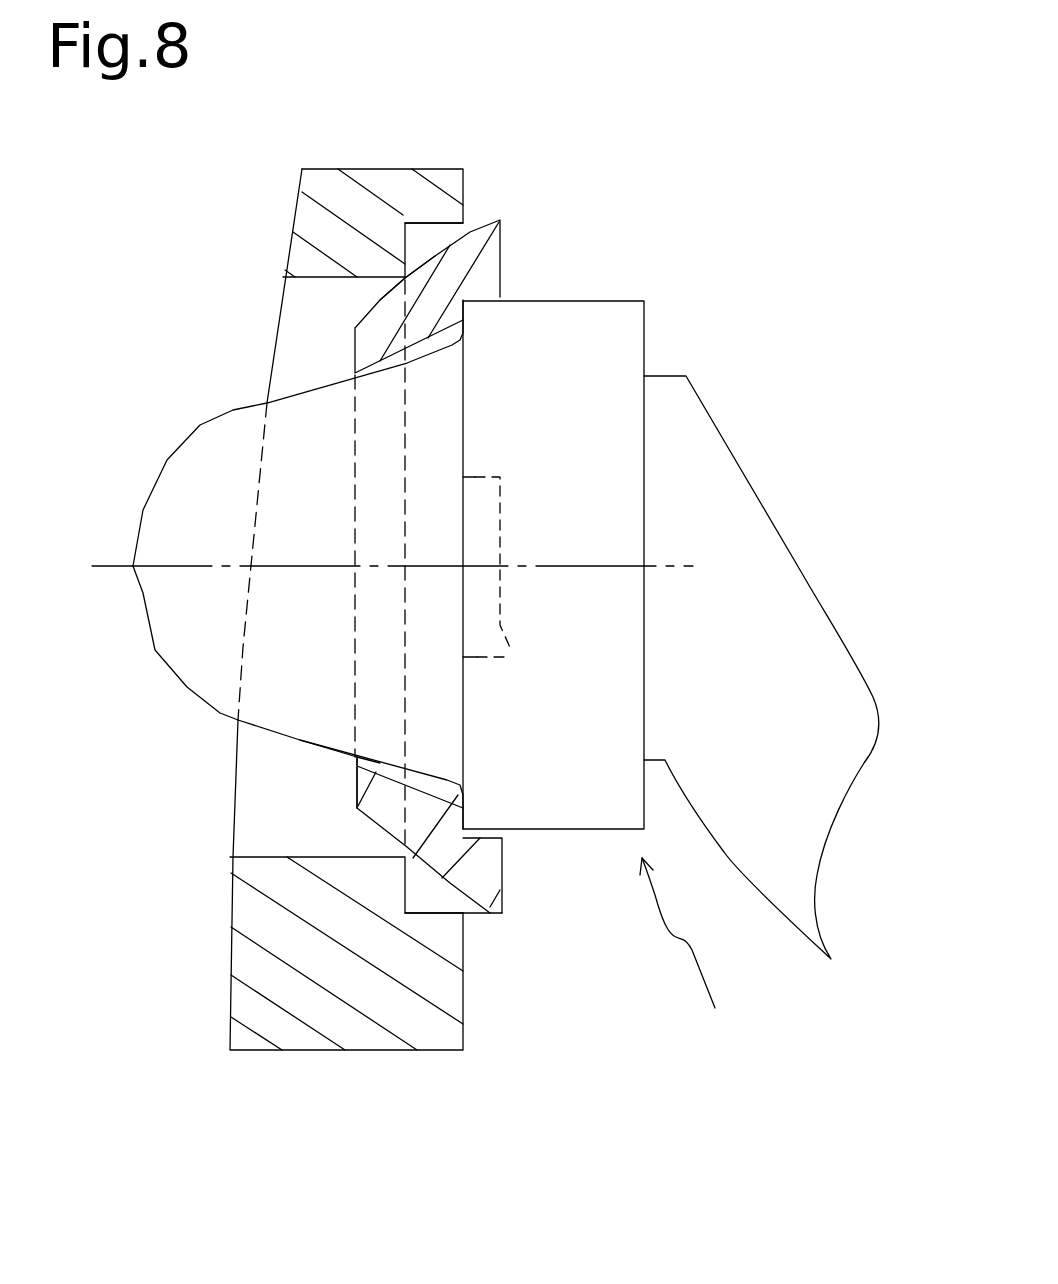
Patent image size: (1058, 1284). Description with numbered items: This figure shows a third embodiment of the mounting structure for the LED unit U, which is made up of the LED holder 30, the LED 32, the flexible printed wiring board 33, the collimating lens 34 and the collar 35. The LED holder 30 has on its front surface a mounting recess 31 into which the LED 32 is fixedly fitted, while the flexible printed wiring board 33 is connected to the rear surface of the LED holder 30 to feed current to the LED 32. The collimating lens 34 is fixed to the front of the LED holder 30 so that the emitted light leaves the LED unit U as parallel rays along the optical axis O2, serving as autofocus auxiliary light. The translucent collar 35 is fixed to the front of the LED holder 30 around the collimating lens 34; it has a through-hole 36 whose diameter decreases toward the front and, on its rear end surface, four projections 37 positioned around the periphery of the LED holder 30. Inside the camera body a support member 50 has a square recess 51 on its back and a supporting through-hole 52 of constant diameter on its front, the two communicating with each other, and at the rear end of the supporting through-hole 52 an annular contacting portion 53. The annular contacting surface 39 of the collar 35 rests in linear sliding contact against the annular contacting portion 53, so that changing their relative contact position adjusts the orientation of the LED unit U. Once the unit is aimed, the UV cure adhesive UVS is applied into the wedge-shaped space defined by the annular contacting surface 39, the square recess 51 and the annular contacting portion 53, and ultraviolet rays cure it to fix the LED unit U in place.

The LED holder 30 is at (580, 330).
The mounting recess 31 is at (506, 488).
The LED 32 is at (507, 657).
The flexible printed wiring board 33 is at (756, 580).
The collimating lens 34 is at (160, 595).
The collar 35 is at (375, 807).
The through-hole 36 is at (375, 757).
The projections 37 is at (490, 281).
The annular contacting surface 39 is at (432, 880).
The support member 50 is at (287, 1030).
The square recess 51 is at (452, 915).
The supporting through-hole 52 is at (320, 277).
The annular contacting portion 53 is at (405, 278).
The UV cure adhesive UVS is at (405, 222).
The optical axis O2 is at (110, 565).
The LED unit U is at (683, 955).